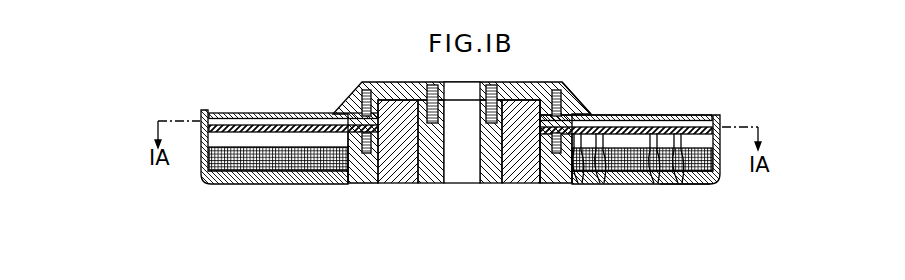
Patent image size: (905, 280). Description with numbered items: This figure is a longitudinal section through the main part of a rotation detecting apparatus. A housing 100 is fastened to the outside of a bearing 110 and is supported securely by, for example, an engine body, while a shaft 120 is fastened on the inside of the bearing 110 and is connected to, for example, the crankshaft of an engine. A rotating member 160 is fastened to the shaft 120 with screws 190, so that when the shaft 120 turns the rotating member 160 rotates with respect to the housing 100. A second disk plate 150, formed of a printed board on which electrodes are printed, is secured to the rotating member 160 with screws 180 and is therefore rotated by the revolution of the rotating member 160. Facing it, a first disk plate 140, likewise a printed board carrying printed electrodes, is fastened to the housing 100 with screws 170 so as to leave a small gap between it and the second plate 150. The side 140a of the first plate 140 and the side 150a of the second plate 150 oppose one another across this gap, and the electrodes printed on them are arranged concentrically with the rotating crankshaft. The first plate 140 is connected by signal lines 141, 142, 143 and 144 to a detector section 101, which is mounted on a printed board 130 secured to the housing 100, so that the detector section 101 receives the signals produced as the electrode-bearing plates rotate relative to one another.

The housing 100 is at (560, 177).
The detector section 101 is at (298, 170).
The bearing 110 is at (518, 177).
The shaft 120 is at (488, 177).
The printed board 130 is at (655, 172).
The first disk plate 140 is at (700, 133).
The side of the first plate 140a is at (680, 128).
The signal line 141 is at (707, 185).
The signal line 142 is at (672, 179).
The signal line 143 is at (621, 170).
The signal line 144 is at (582, 182).
The second disk plate 150 is at (703, 113).
The side of the second plate 150a is at (632, 123).
The rotating member 160 is at (576, 93).
The screws 170 is at (547, 148).
The screws 180 is at (580, 113).
The screws 190 is at (497, 96).